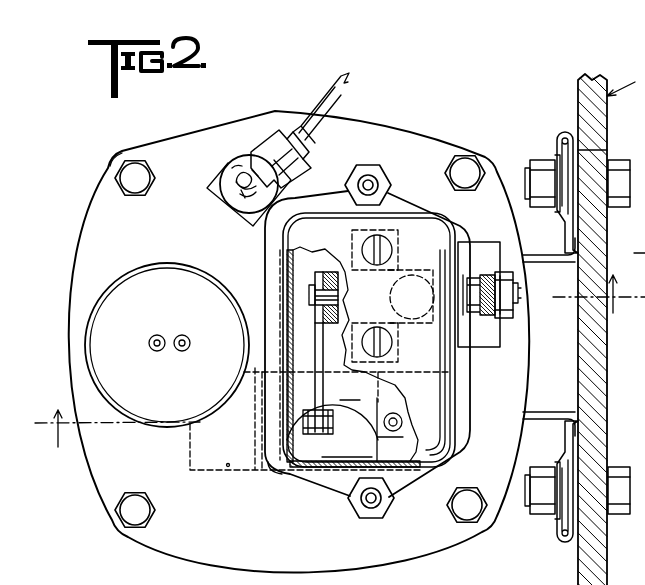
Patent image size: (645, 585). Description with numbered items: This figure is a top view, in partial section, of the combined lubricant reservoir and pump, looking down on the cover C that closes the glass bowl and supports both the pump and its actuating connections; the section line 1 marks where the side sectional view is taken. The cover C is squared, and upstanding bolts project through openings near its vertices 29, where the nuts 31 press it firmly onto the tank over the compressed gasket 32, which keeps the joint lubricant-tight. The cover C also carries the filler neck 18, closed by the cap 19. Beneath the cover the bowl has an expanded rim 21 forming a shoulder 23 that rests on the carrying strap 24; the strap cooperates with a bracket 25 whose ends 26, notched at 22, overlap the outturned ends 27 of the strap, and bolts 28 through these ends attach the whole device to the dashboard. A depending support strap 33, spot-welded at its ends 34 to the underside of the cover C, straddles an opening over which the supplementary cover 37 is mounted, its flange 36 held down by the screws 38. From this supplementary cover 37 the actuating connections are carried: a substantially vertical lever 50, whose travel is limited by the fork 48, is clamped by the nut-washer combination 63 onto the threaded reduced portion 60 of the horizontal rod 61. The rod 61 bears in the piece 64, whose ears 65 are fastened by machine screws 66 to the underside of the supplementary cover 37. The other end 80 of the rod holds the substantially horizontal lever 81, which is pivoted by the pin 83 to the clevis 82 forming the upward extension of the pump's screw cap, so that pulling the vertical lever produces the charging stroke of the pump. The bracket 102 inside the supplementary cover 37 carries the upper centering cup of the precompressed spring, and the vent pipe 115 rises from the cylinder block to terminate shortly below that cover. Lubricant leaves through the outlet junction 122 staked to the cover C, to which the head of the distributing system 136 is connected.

The cover C is at (423, 125).
The section line 1— 1 is at (340, 254).
The filler neck 18 is at (611, 329).
The cap 19 is at (130, 270).
The expanded rim 21 is at (634, 308).
The notch 22 is at (567, 243).
The shoulder 23 is at (634, 335).
The carrying strap 24 is at (538, 255).
The bracket 25 is at (576, 149).
The bracket ends 26 is at (558, 158).
The outturned ends 27 is at (565, 137).
The bolts 28 is at (626, 180).
The vertices 29 is at (116, 156).
The nuts 31 is at (118, 180).
The gasket 32 is at (626, 253).
The support strap 33 is at (268, 464).
The strap ends 34 is at (189, 447).
The flange 36 is at (408, 182).
The supplementary cover 37 is at (452, 402).
The screws 38 is at (368, 178).
The fork 48 is at (487, 244).
The lever 50 is at (518, 285).
The threaded reduced portion 60 is at (514, 306).
The horizontal rod 61 is at (480, 310).
The nut-washer combination 63 is at (514, 309).
The piece 64 is at (287, 258).
The ears 65 is at (400, 241).
The machine screws 66 is at (362, 246).
The rod end 80 is at (308, 295).
The horizontal lever 81 is at (320, 338).
The clevis 82 is at (296, 462).
The pin 83 is at (302, 419).
The bracket 102 is at (380, 398).
The vent pipe 115 is at (350, 408).
The outlet junction 122 is at (226, 165).
The distributing system 136 is at (326, 90).